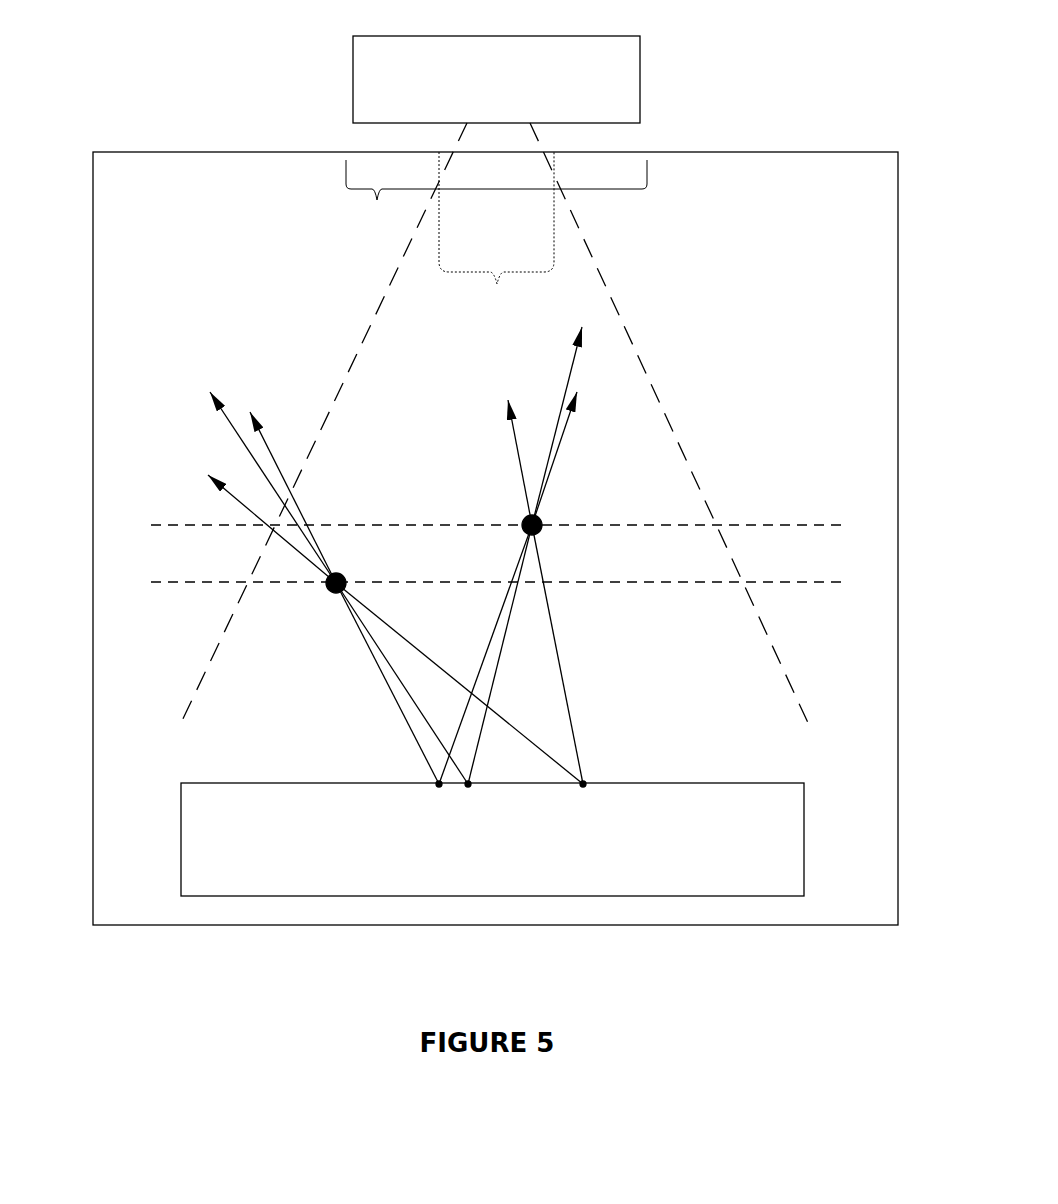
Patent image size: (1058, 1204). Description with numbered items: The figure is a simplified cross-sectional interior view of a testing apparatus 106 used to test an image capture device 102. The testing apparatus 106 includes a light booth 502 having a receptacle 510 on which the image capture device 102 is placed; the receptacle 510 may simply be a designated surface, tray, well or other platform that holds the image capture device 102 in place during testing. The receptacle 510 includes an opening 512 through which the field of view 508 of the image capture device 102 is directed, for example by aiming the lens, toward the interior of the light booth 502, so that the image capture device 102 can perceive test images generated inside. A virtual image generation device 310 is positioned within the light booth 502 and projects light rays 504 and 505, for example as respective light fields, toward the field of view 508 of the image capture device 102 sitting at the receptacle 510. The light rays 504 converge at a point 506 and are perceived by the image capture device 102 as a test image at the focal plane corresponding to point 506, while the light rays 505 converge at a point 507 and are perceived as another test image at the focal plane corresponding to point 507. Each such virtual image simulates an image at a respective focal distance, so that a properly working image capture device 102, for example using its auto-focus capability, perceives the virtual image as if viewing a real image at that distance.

The testing apparatus 106 is at (745, 77).
The image capture device 102 is at (496, 79).
The light booth 502 is at (495, 538).
The light rays 504 is at (218, 397).
The light rays 505 is at (585, 341).
The point 506 is at (341, 600).
The point 507 is at (540, 533).
The field of view 508 is at (598, 277).
The receptacle 510 is at (323, 424).
The opening 512 is at (496, 237).
The virtual image generation device 310 is at (492, 838).